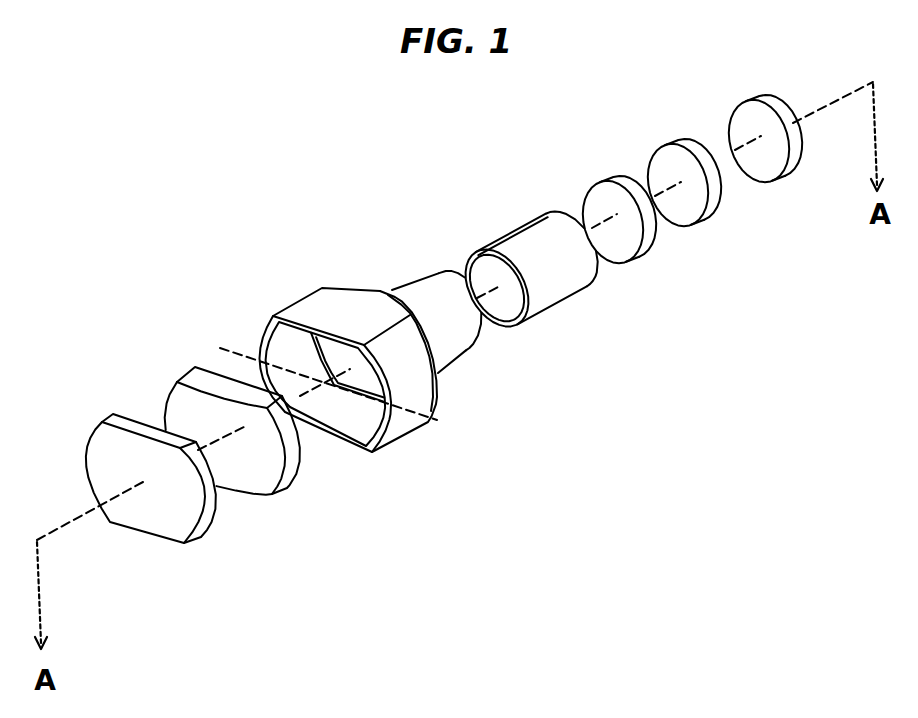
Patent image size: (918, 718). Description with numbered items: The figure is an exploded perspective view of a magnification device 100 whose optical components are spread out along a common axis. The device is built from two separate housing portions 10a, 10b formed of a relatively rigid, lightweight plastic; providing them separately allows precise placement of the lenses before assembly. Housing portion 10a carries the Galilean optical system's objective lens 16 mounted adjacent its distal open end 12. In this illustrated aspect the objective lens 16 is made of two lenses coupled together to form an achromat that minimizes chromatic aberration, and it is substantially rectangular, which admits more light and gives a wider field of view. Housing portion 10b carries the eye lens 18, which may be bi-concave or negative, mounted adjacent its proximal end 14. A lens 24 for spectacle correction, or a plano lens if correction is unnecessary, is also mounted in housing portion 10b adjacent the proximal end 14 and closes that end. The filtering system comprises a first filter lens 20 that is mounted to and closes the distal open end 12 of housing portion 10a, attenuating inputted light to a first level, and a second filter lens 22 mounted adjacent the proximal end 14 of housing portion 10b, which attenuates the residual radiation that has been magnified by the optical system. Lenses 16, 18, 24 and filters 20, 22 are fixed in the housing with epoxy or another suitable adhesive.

The magnification device 100 is at (377, 188).
The distal open end 12 is at (290, 349).
The proximal end 14 is at (555, 209).
The housing portion 10a is at (460, 343).
The housing portion 10b is at (565, 288).
The objective lens 16 is at (259, 481).
The eye lens 18 is at (645, 240).
The first filter lens 20 is at (172, 528).
The second filter lens 22 is at (716, 202).
The spectacle correction lens 24 is at (794, 155).